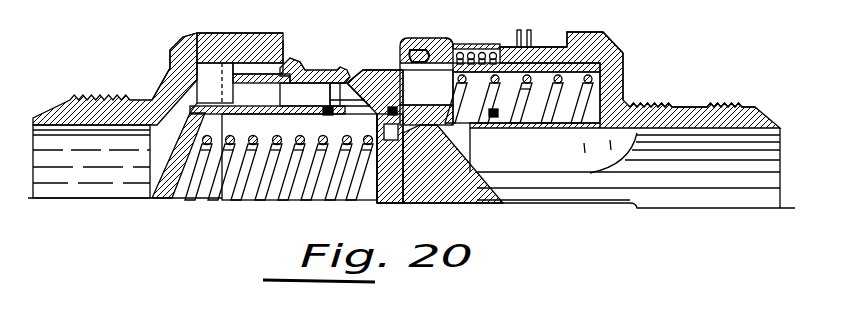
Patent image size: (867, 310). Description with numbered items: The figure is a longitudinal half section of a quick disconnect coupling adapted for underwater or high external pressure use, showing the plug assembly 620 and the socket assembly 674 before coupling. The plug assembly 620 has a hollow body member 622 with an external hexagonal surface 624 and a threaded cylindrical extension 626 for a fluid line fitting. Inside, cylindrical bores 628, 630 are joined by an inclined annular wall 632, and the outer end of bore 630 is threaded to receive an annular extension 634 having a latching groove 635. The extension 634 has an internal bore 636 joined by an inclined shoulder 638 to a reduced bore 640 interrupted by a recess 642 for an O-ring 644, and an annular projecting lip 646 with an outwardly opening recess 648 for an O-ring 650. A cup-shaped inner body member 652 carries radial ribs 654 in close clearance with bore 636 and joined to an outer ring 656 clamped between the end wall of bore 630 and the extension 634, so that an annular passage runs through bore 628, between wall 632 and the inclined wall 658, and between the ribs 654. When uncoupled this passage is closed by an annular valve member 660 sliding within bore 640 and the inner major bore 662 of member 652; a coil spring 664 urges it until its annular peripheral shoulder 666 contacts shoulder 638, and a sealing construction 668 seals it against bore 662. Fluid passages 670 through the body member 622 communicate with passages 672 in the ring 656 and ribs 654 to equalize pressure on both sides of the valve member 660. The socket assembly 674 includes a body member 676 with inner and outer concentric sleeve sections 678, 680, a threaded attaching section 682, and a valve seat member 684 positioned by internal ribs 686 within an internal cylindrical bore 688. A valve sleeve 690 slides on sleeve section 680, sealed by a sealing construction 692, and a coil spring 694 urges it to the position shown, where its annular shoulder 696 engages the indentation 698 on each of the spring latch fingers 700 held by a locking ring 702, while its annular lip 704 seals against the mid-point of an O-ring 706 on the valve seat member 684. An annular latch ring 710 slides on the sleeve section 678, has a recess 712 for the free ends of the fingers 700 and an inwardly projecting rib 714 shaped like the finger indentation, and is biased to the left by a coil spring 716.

The plug assembly 620 is at (291, 45).
The hollow body member 622 is at (186, 50).
The external hexagonal surface 624 is at (240, 33).
The threaded cylindrical extension 626 is at (102, 98).
The cylindrical bore 628 is at (82, 126).
The cylindrical bore 630 is at (218, 33).
The inclined annular wall 632 is at (140, 136).
The annular extension 634 is at (352, 64).
The annular latching groove 635 is at (346, 60).
The internal bore 636 is at (322, 82).
The inclined shoulder 638 is at (325, 94).
The reduced bore 640 is at (391, 158).
The recess 642 is at (394, 73).
The O-ring 644 is at (375, 136).
The annular projecting lip 646 is at (426, 87).
The outwardly opening recess 648 is at (393, 136).
The O-ring 650 is at (443, 104).
The cup-shaped inner body member 652 is at (168, 199).
The radial ribs 654 is at (292, 97).
The outer ring 656 is at (200, 102).
The inclined wall 658 is at (165, 160).
The annular valve member 660 is at (380, 204).
The inner major bore 662 is at (283, 153).
The coil spring 664 is at (272, 199).
The annular peripheral shoulder 666 is at (325, 180).
The sealing construction 668 is at (322, 118).
The fluid passages 670 is at (267, 33).
The passages 672 is at (262, 104).
The socket assembly 674 is at (545, 47).
The body member 676 is at (627, 68).
The inner sleeve section 678 is at (598, 32).
The outer sleeve section 680 is at (583, 147).
The threaded attaching section 682 is at (672, 102).
The valve seat member 684 is at (432, 204).
The internal ribs 686 is at (596, 165).
The internal cylindrical bore 688 is at (765, 118).
The valve sleeve 690 is at (535, 99).
The sealing construction 692 is at (491, 150).
The coil spring 694 is at (560, 146).
The annular shoulder 696 is at (469, 99).
The indentation 698 is at (452, 40).
The spring latch fingers 700 is at (526, 93).
The locking ring 702 is at (603, 52).
The annular lip 704 is at (439, 127).
The O-ring 706 is at (453, 164).
The annular latch ring 710 is at (408, 40).
The recess 712 is at (428, 52).
The inwardly projecting rib 714 is at (471, 44).
The coil spring 716 is at (503, 47).